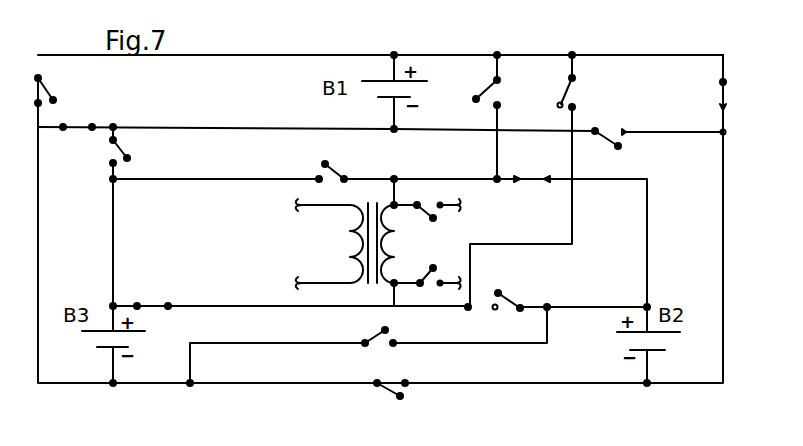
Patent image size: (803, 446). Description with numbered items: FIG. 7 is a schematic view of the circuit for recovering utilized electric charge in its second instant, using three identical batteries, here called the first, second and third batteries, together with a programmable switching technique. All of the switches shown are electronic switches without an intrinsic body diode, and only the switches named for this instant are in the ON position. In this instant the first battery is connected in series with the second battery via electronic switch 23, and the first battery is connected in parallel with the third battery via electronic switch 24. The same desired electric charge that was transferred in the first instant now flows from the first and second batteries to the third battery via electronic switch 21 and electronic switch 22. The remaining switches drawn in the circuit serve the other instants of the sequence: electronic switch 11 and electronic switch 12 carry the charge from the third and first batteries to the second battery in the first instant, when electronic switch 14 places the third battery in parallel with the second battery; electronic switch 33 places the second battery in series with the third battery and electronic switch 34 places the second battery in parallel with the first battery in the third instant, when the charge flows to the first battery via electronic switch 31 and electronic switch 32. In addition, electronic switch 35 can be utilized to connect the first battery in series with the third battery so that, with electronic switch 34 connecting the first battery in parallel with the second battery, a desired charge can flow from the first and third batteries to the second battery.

The electronic switch 11 is at (478, 115).
The electronic switch 12 is at (512, 294).
The electronic switch 14 is at (408, 395).
The electronic switch 21 is at (522, 165).
The electronic switch 22 is at (152, 293).
The electronic switch 23 is at (705, 93).
The electronic switch 24 is at (95, 140).
The electronic switch 31 is at (338, 165).
The electronic switch 32 is at (538, 179).
The electronic switch 33 is at (347, 350).
The electronic switch 34 is at (659, 127).
The electronic switch 35 is at (55, 88).